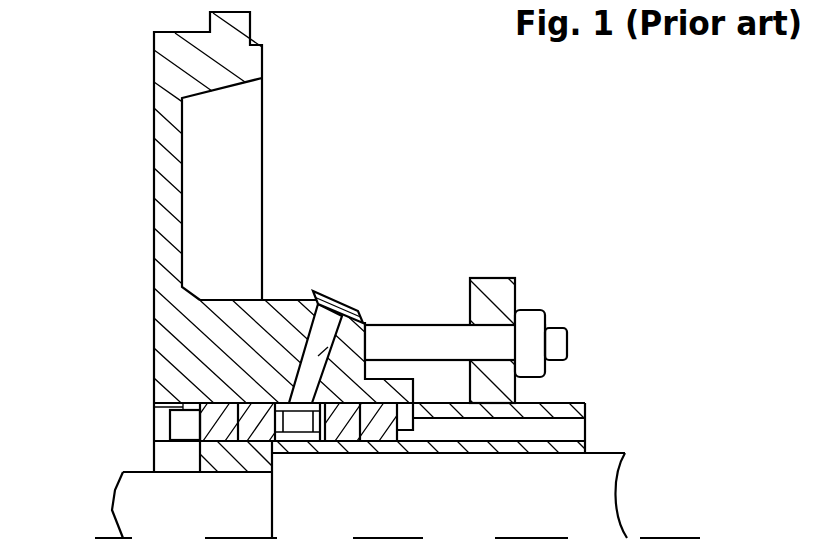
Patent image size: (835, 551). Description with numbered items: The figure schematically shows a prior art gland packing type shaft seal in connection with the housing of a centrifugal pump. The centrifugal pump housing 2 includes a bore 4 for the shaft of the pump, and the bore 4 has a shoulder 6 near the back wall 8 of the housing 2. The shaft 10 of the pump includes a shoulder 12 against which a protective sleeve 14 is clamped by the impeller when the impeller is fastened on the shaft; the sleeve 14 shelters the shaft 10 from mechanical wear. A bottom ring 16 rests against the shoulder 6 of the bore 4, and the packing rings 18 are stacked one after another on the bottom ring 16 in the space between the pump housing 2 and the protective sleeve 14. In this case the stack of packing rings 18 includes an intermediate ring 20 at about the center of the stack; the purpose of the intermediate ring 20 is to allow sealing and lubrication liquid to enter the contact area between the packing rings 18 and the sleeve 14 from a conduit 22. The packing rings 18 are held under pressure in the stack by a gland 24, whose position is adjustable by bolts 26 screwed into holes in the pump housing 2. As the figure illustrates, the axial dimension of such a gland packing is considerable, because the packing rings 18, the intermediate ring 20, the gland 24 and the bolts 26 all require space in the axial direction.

The centrifugal pump housing 2 is at (237, 337).
The bore 4 is at (227, 392).
The shoulder 6 is at (187, 402).
The back wall 8 is at (155, 113).
The shaft 10 is at (362, 532).
The shoulder 12 is at (274, 461).
The protective sleeve 14 is at (575, 447).
The bottom ring 16 is at (170, 420).
The packing rings 18 is at (198, 446).
The intermediate ring 20 is at (365, 378).
The conduit 22 is at (362, 313).
The gland 24 is at (487, 305).
The bolts 26 is at (483, 347).